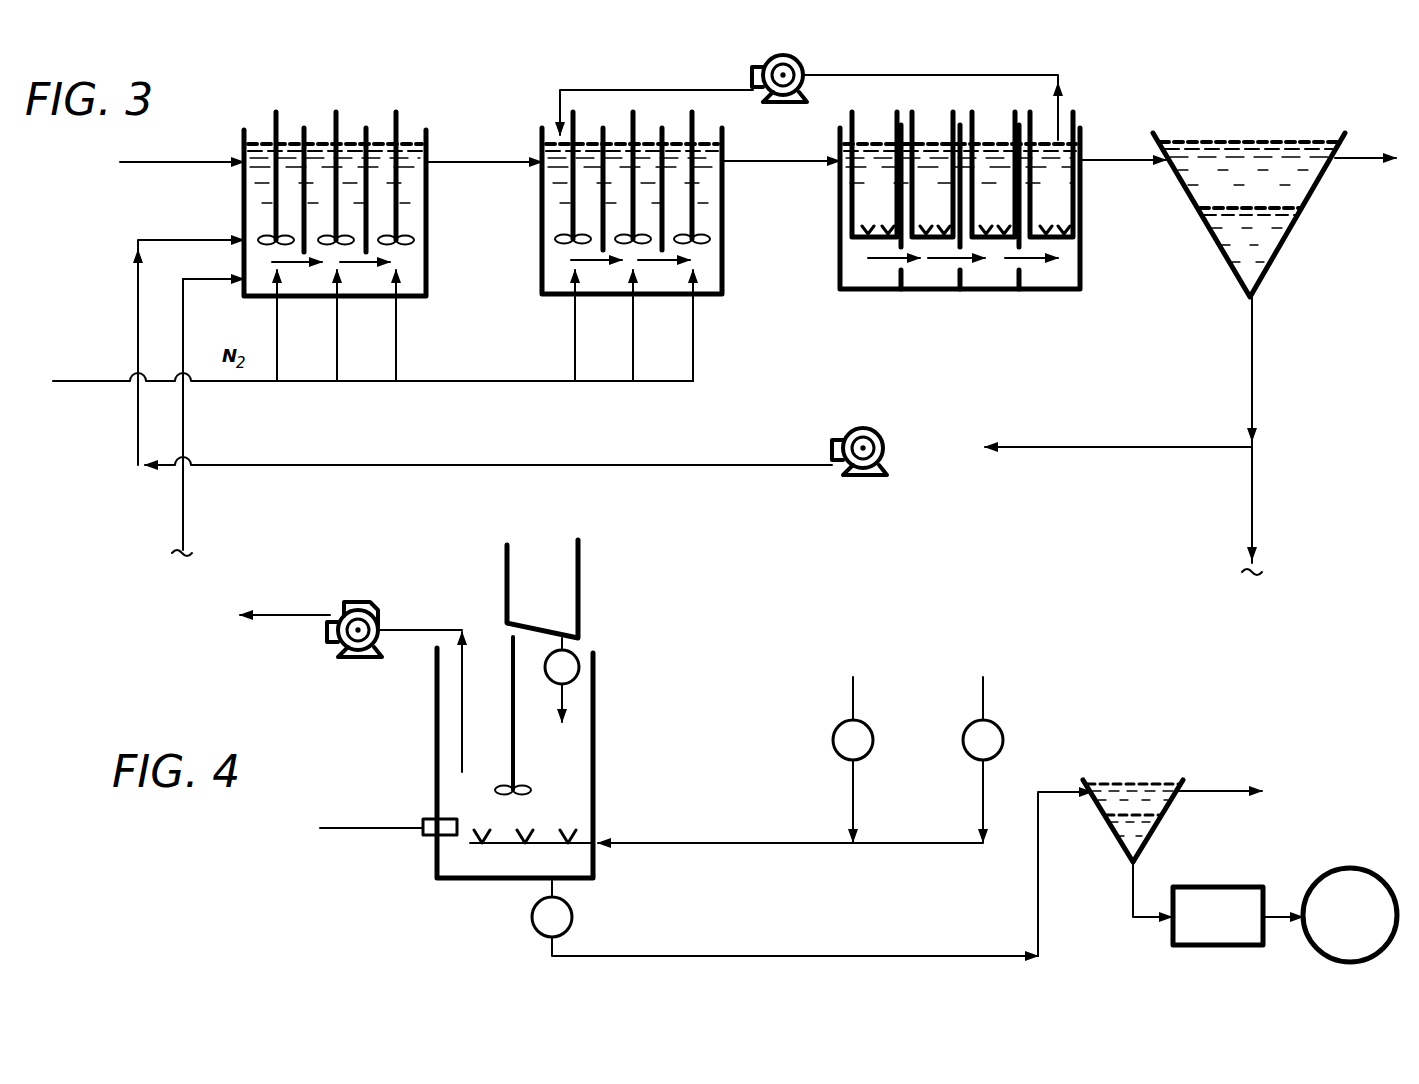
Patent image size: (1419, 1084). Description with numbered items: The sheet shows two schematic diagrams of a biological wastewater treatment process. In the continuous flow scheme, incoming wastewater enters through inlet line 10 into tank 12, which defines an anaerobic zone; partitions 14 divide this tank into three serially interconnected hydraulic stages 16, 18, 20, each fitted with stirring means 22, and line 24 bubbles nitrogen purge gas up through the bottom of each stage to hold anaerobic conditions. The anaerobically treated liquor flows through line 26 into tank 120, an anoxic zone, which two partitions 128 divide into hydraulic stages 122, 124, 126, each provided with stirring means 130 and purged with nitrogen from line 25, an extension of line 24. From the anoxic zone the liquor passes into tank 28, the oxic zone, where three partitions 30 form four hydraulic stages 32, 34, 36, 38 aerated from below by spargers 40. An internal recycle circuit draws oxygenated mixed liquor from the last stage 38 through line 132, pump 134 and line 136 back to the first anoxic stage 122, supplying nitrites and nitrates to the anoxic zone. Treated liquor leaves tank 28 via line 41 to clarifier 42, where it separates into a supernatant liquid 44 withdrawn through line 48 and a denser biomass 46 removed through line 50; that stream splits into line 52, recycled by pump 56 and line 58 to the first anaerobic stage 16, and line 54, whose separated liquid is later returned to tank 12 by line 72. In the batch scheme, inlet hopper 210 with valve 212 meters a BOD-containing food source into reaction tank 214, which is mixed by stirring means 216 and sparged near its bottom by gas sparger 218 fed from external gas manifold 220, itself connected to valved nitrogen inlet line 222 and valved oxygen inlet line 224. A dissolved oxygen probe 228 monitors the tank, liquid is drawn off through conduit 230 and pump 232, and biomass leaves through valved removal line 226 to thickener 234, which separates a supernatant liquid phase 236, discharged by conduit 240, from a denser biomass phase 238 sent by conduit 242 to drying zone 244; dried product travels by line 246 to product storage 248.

In FIG. 3, the inlet line 10 is at (211, 168).
In FIG. 3, the tank 12 is at (475, 128).
In FIG. 3, the partitions 14 is at (290, 311).
In FIG. 3, the hydraulic stage 16 is at (271, 203).
In FIG. 3, the hydraulic stage 18 is at (331, 203).
In FIG. 3, the hydraulic stage 20 is at (421, 203).
In FIG. 3, the stirring means 22 is at (272, 116).
In FIG. 3, the line 24 is at (313, 382).
In FIG. 3, the line 25 is at (487, 381).
In FIG. 3, the line 26 is at (518, 160).
In FIG. 3, the tank 28 is at (840, 253).
In FIG. 3, the partitions 30 is at (898, 272).
In FIG. 3, the hydraulic stage 32 is at (886, 203).
In FIG. 3, the hydraulic stage 34 is at (946, 203).
In FIG. 3, the hydraulic stage 36 is at (1006, 203).
In FIG. 3, the hydraulic stage 38 is at (1064, 203).
In FIG. 3, the spargers 40 is at (910, 114).
In FIG. 3, the line 41 is at (1108, 158).
In FIG. 3, the clarifier 42 is at (1342, 135).
In FIG. 3, the supernatant liquid 44 is at (1258, 188).
In FIG. 3, the biomass 46 is at (1264, 238).
In FIG. 3, the line 48 is at (1352, 158).
In FIG. 3, the line 50 is at (1253, 360).
In FIG. 3, the line 52 is at (1128, 444).
In FIG. 3, the line 54 is at (1254, 488).
In FIG. 3, the pump 56 is at (876, 430).
In FIG. 3, the line 58 is at (606, 465).
In FIG. 3, the line 72 is at (183, 500).
In FIG. 3, the tank 120 is at (542, 267).
In FIG. 3, the hydraulic stage 122 is at (560, 196).
In FIG. 3, the hydraulic stage 124 is at (616, 214).
In FIG. 3, the hydraulic stage 126 is at (704, 209).
In FIG. 3, the partitions 128 is at (586, 312).
In FIG. 3, the stirring means 130 is at (628, 124).
In FIG. 3, the line 132 is at (1060, 100).
In FIG. 3, the pump 134 is at (805, 62).
In FIG. 3, the line 136 is at (702, 88).
In FIG. 4, the inlet hopper 210 is at (580, 588).
In FIG. 4, the valve 212 is at (578, 654).
In FIG. 4, the reaction tank 214 is at (596, 694).
In FIG. 4, the stirring means 216 is at (515, 752).
In FIG. 4, the gas sparger 218 is at (506, 846).
In FIG. 4, the inlet gas manifold 220 is at (770, 840).
In FIG. 4, the valved nitrogen inlet line 222 is at (855, 702).
In FIG. 4, the valved oxygen inlet line 224 is at (985, 702).
In FIG. 4, the valved biomass removal line 226 is at (776, 954).
In FIG. 4, the dissolved oxygen probe 228 is at (426, 820).
In FIG. 4, the conduit 230 is at (410, 623).
In FIG. 4, the pump 232 is at (370, 608).
In FIG. 4, the thickener 234 is at (1190, 782).
In FIG. 4, the supernatant liquid phase 236 is at (1132, 798).
In FIG. 4, the biomass phase 238 is at (1134, 828).
In FIG. 4, the conduit 240 is at (1210, 795).
In FIG. 4, the conduit 242 is at (1132, 886).
In FIG. 4, the drying zone 244 is at (1236, 929).
In FIG. 4, the line 246 is at (1292, 870).
In FIG. 4, the product storage 248 is at (1368, 926).